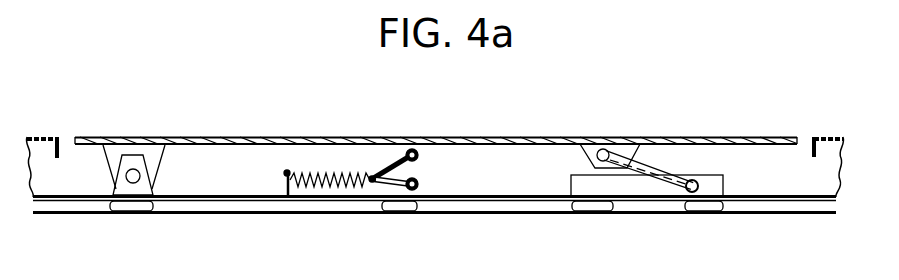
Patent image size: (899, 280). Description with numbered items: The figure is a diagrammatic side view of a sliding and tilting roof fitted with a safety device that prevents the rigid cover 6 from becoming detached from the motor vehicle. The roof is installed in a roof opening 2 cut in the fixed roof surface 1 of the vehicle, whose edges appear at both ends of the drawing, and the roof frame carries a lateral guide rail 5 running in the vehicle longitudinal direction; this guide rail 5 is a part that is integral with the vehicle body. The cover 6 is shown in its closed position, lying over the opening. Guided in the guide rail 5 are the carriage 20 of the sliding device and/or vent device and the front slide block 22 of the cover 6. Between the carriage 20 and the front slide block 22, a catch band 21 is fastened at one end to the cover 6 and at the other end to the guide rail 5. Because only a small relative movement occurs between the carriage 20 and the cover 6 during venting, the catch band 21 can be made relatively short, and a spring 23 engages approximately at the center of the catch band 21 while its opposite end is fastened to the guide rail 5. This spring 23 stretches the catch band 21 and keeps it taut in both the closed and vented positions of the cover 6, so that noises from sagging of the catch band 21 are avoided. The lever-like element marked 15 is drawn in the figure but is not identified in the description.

The fixed roof surface 1 is at (42, 135).
The roof opening 2 is at (67, 142).
The guide rail 5 is at (503, 210).
The cover 6 is at (517, 137).
The link lever 15 is at (643, 165).
The carriage 20 is at (643, 186).
The catch band 21 is at (382, 177).
The front slide block 22 is at (135, 211).
The spring 23 is at (330, 170).